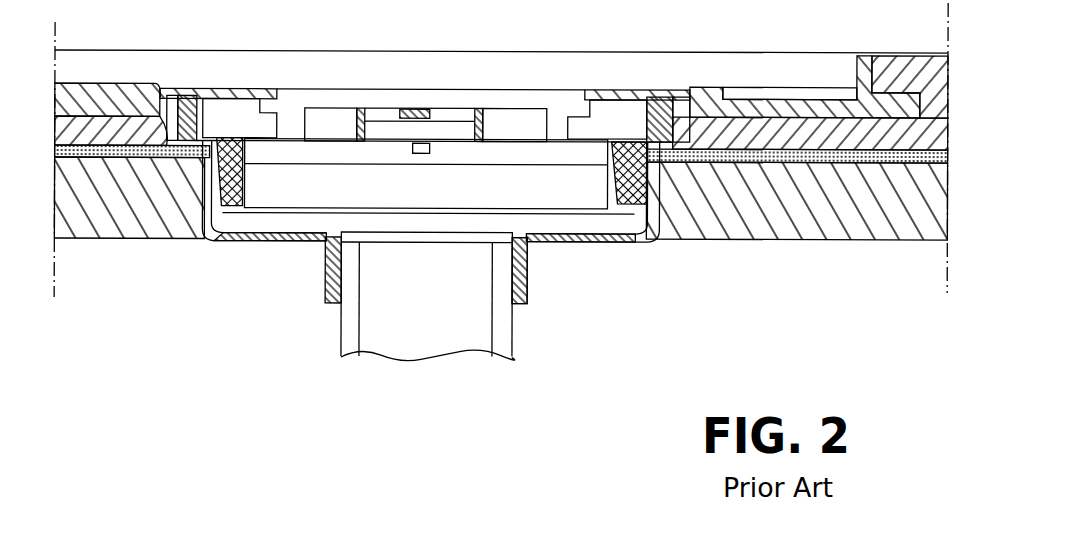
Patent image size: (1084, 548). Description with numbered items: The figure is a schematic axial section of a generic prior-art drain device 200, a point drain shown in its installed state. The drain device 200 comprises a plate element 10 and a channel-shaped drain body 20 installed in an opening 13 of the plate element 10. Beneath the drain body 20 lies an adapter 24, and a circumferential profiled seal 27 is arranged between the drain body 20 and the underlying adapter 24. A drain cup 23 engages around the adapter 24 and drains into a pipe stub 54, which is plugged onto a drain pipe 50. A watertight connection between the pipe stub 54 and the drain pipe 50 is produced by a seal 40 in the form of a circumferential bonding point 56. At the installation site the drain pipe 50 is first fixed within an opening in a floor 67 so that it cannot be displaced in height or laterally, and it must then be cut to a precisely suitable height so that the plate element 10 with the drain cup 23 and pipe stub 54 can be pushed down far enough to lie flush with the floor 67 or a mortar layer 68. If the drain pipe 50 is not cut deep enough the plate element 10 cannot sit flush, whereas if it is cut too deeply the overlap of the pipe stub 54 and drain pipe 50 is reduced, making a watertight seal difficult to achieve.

The drain device 200 is at (172, 292).
The plate element 10 is at (900, 62).
The drain body 20 is at (97, 97).
The opening 13 is at (455, 98).
The mortar layer 68 is at (787, 150).
The floor 67 is at (80, 232).
The adapter 24 is at (268, 202).
The drain cup 23 is at (622, 243).
The profiled seal 27 is at (640, 168).
The drain pipe 50 is at (350, 340).
The pipe stub 54 is at (327, 285).
The seal 40 is at (517, 268).
The bonding point 56 is at (519, 271).